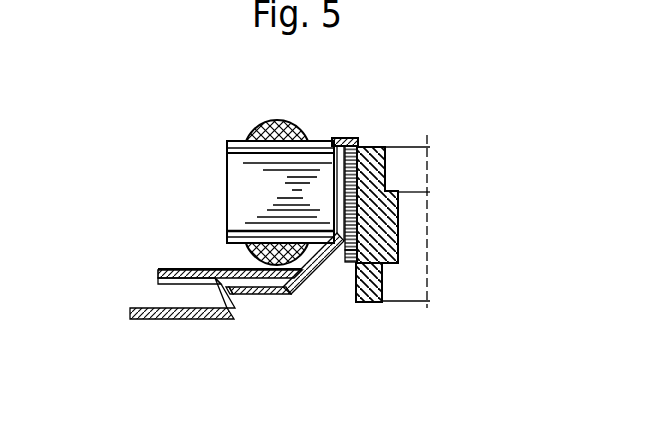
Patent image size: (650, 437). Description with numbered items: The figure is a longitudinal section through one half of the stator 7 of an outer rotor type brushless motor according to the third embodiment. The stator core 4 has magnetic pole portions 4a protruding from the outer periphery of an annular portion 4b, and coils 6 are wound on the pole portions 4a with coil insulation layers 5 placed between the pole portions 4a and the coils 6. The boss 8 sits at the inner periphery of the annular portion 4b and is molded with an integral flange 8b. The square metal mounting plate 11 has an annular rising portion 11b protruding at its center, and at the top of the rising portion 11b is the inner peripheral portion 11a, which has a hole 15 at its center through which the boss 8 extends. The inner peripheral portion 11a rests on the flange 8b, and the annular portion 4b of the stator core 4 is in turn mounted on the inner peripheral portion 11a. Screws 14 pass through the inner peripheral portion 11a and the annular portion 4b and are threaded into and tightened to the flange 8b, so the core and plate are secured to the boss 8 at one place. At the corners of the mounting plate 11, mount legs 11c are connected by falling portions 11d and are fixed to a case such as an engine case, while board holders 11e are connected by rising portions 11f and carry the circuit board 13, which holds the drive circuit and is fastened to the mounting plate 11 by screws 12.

The stator core 4 is at (242, 183).
The magnetic pole portions 4a is at (240, 180).
The annular portion 4b is at (318, 153).
The coil insulation layers 5 is at (233, 139).
The coils 6 is at (275, 121).
The stator 7 is at (224, 198).
The boss 8 is at (385, 173).
The flange 8b is at (397, 271).
The mounting plate 11 is at (282, 297).
The inner peripheral portion 11a is at (331, 230).
The rising portion 11b is at (312, 267).
The mount legs 11c is at (152, 318).
The falling portions 11d is at (228, 307).
The board holders 11e is at (190, 284).
The rising portions 11f is at (207, 295).
The screws 12 is at (187, 262).
The circuit board 13 is at (222, 268).
The screws 14 is at (345, 138).
The hole 15 is at (358, 258).